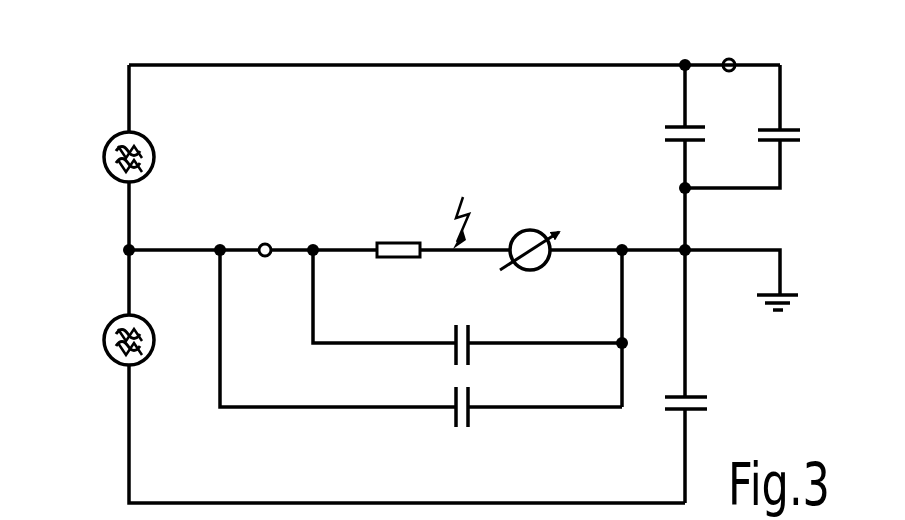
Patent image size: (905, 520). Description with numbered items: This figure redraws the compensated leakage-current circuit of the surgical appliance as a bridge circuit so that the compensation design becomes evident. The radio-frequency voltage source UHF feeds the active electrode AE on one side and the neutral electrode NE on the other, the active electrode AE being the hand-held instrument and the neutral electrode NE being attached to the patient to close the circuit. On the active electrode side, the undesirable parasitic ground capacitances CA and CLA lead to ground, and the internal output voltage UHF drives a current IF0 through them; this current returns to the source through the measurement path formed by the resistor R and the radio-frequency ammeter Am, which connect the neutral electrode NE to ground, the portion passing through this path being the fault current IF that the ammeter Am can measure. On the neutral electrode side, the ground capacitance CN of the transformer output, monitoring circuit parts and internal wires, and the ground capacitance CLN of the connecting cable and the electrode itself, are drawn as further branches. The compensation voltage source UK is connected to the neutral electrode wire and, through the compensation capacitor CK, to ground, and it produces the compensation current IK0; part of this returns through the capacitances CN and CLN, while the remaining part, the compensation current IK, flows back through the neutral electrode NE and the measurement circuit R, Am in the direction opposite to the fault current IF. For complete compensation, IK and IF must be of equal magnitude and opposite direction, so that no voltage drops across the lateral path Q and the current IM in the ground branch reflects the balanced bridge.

The radio-frequency voltage source UHF is at (92, 150).
The current IF0 is at (152, 194).
The compensation voltage source UK is at (92, 330).
The compensation current IK0 is at (188, 279).
The neutral electrode NE is at (267, 234).
The resistor R is at (398, 266).
The compensation current IK is at (421, 179).
The fault current IF is at (423, 220).
The lateral path Q is at (467, 207).
The radio-frequency ammeter Am is at (529, 232).
The ground capacitance of the neutral electrode connecting cable CLN is at (486, 339).
The ground capacitance on the neutral electrode side CN is at (482, 400).
The ground capacitance on the active electrode side CA is at (674, 119).
The active electrode AE is at (726, 48).
The parasitic capacitance on the active electrode side CLA is at (795, 119).
The measured current IM is at (810, 260).
The compensation capacitor CK is at (695, 384).